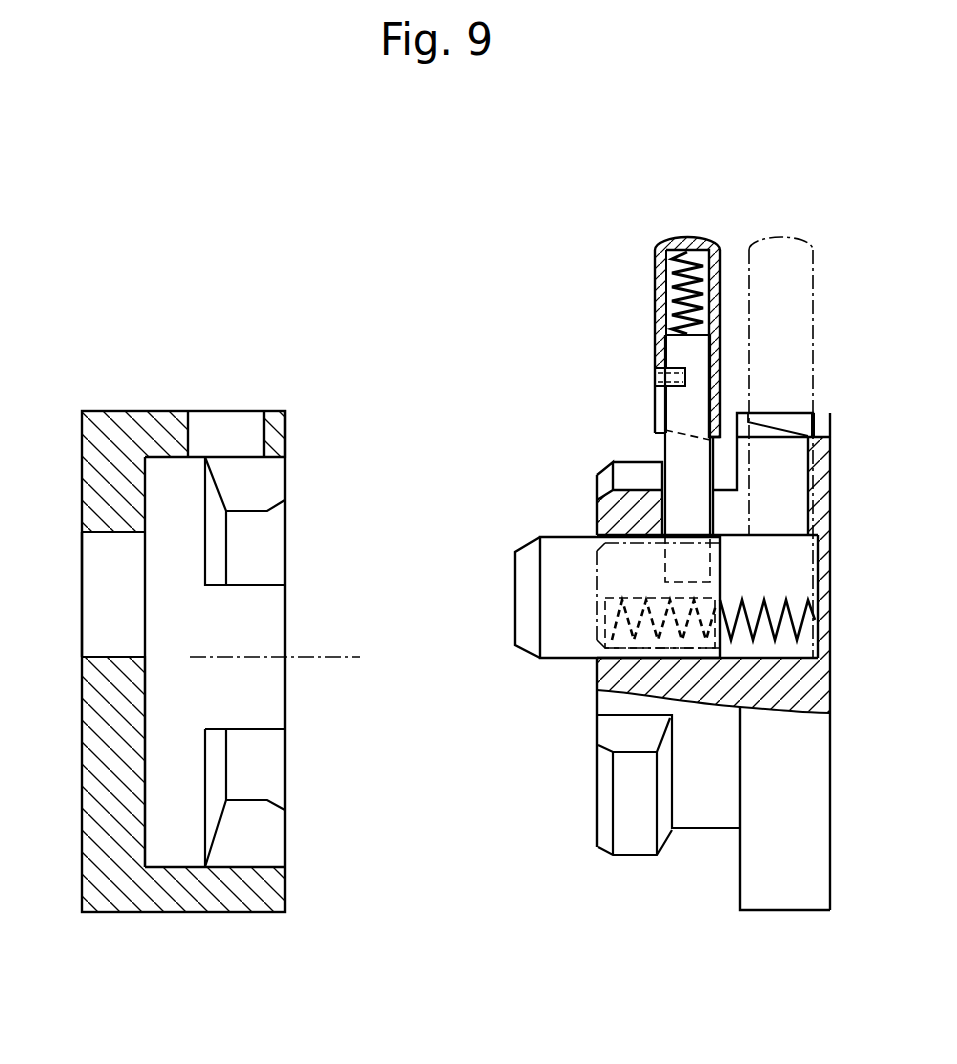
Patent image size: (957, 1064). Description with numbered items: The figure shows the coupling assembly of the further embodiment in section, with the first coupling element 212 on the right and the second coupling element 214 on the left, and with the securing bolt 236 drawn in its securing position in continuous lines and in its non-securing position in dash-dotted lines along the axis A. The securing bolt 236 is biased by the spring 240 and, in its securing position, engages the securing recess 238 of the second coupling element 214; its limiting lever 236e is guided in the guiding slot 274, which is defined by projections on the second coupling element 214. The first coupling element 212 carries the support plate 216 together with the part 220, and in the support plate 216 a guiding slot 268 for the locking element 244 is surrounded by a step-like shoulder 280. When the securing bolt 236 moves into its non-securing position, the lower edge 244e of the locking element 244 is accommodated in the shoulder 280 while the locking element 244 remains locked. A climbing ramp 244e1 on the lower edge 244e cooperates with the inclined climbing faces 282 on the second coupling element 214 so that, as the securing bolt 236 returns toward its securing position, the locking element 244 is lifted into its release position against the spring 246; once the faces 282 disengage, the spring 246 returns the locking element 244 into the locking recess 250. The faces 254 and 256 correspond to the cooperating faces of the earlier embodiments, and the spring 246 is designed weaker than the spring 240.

The coupling element 212 is at (778, 922).
The coupling element 214 is at (195, 920).
The support plate 216 is at (805, 877).
The element corresponding to part 20 of the first embodiment 220 is at (700, 795).
The securing bolt 236 is at (575, 633).
The limiting lever 236e is at (673, 453).
The securing recess 238 is at (107, 630).
The spring 240 is at (787, 600).
The locking element 244 is at (655, 255).
The lower edge 244e is at (720, 427).
The climbing ramp 244e1 is at (655, 435).
The spring 246 is at (702, 250).
The locking recess 250 is at (204, 420).
The face 254 is at (509, 577).
The face 256 is at (157, 700).
The guiding slot 268 is at (740, 505).
The guiding slot 274 is at (277, 445).
The step-like shoulder 280 is at (780, 420).
The climbing faces 282 is at (278, 415).
The axis A is at (338, 664).